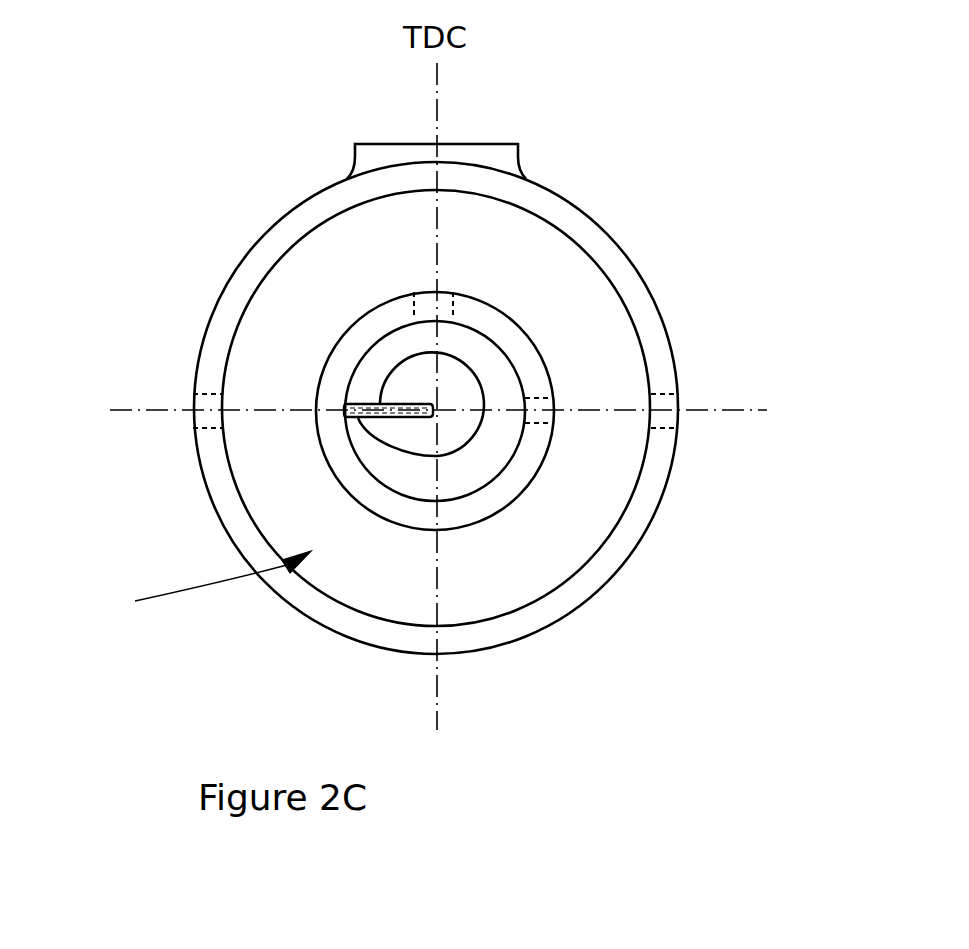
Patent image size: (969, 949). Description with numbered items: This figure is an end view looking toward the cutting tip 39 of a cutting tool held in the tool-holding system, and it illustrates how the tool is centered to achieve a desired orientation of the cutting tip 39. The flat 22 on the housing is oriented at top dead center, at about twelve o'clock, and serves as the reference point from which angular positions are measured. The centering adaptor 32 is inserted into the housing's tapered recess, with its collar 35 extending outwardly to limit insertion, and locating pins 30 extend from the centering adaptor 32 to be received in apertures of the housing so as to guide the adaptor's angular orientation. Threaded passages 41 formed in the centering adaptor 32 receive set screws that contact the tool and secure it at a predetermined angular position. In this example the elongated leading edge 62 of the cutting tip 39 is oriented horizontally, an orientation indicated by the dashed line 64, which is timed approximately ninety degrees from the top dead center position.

The flat 22 is at (405, 143).
The collar 35 is at (297, 235).
The locating pin 30 is at (193, 395).
The threaded passage 41 is at (425, 308).
The elongated leading edge 62 is at (357, 403).
The cutting tip 39 is at (407, 418).
The centering adaptor 32 is at (199, 585).
The dashed line 64 is at (441, 396).